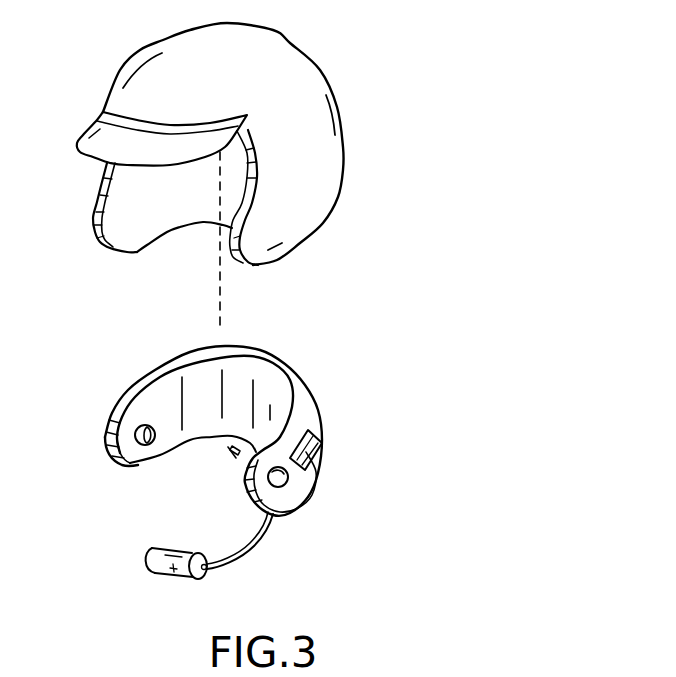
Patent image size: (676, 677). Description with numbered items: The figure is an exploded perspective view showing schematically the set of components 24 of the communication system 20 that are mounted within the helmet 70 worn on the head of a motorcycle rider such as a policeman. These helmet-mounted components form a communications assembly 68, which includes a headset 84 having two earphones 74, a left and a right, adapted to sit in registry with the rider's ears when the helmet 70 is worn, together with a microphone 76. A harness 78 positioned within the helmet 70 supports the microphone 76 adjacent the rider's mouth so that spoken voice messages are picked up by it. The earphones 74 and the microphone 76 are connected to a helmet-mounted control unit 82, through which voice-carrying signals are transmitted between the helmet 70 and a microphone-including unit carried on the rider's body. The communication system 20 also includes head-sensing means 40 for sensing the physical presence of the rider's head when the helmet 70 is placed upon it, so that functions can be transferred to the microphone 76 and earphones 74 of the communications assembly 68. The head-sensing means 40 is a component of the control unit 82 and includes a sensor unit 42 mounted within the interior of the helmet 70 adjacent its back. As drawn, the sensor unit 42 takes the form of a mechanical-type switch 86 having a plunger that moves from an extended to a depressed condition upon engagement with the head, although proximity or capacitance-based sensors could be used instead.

The communication system 20 is at (235, 175).
The helmet 70 is at (183, 72).
The set of components 24 is at (206, 467).
The head-sensing means 40 is at (206, 467).
The headset 84 is at (174, 426).
The communications assembly 68 is at (107, 437).
The earphones 74 is at (146, 425).
The harness 78 is at (326, 397).
The control unit 82 is at (320, 435).
The sensor unit 42 is at (228, 454).
The mechanical-type switch 86 is at (228, 457).
The microphone 76 is at (175, 575).